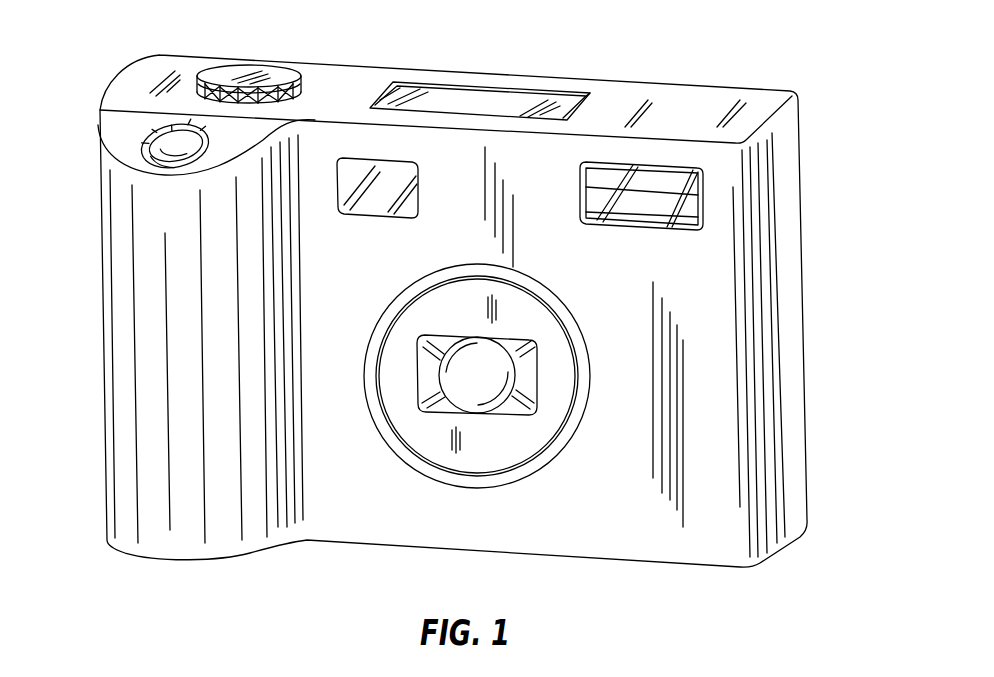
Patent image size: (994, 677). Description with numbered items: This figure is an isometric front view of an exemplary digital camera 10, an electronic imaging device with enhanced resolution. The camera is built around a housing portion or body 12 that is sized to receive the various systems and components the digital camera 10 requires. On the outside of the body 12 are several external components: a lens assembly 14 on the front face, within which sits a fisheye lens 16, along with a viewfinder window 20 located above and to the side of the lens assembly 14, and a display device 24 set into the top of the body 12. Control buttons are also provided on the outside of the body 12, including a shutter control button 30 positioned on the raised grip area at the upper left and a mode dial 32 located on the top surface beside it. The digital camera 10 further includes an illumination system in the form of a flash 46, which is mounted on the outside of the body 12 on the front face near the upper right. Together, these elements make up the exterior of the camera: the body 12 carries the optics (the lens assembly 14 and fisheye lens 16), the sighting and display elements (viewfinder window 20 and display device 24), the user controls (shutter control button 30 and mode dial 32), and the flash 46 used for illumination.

The digital camera 10 is at (471, 285).
The housing portion or body 12 is at (802, 296).
The lens assembly 14 is at (522, 498).
The fisheye lens 16 is at (563, 470).
The viewfinder window 20 is at (362, 222).
The display device 24 is at (480, 87).
The shutter control button 30 is at (146, 141).
The mode dial 32 is at (247, 62).
The flash 46 is at (635, 230).